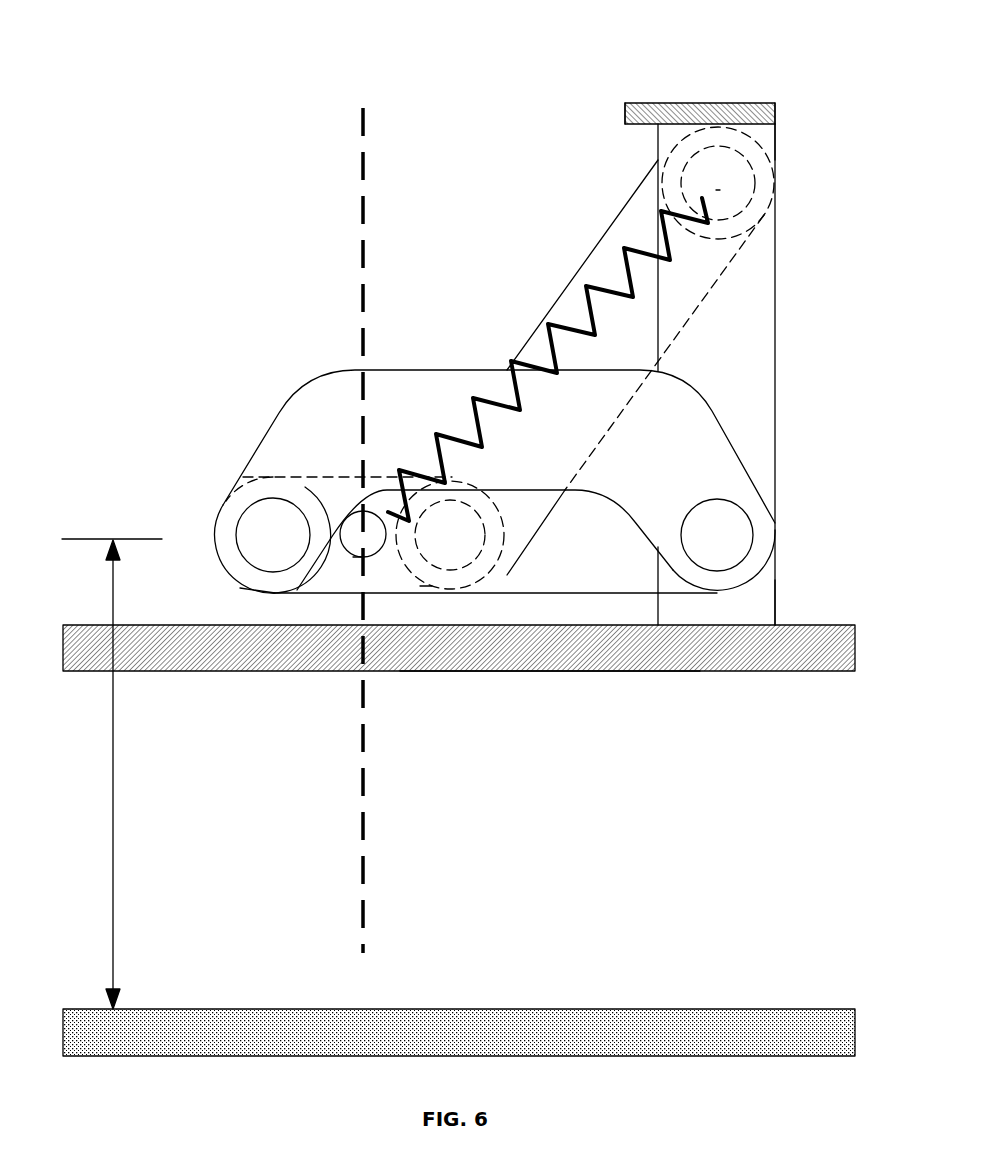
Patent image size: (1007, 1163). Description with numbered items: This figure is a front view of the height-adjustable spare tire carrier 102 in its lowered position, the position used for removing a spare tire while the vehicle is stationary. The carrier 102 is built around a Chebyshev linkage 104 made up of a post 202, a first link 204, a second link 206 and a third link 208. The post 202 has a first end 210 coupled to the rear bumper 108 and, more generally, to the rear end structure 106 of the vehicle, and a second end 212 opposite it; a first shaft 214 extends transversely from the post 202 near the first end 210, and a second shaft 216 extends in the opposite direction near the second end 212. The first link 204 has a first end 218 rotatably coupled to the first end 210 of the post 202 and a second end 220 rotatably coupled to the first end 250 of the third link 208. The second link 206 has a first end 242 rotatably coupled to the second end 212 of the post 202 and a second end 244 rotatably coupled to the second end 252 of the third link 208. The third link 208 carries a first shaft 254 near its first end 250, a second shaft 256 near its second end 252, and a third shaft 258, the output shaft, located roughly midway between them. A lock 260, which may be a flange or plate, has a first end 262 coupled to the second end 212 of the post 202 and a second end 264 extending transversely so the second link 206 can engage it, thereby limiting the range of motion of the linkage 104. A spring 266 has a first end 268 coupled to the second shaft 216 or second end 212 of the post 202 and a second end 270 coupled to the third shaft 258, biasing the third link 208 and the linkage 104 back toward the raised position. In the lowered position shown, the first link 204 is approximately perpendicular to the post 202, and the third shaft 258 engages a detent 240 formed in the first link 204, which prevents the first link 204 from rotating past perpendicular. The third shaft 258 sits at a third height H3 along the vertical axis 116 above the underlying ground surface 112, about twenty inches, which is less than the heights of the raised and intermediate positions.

The height-adjustable spare tire carrier 102 is at (158, 42).
The Chebyshev linkage 104 is at (482, 253).
The rear end structure 106 is at (482, 672).
The rear bumper 108 is at (543, 672).
The underlying ground surface 112 is at (520, 1009).
The vertical axis 116 is at (365, 873).
The third height H3 is at (112, 774).
The post 202 is at (776, 425).
The first link 204 is at (713, 408).
The second link 206 is at (581, 265).
The third link 208 is at (317, 594).
The first end of the post 210 is at (776, 595).
The second end of the post 212 is at (776, 137).
The first shaft 214 is at (753, 528).
The second shaft 216 is at (751, 203).
The first end of the first link 218 is at (725, 597).
The second end of the first link 220 is at (257, 594).
The detent 240 is at (356, 507).
The first end of the second link 242 is at (765, 148).
The second end of the second link 244 is at (425, 583).
The first end of the third link 250 is at (215, 555).
The second end of the third link 252 is at (505, 522).
The first shaft of the third link 254 is at (237, 512).
The second shaft of the third link 256 is at (497, 560).
The third shaft 258 is at (353, 558).
The lock 260 is at (700, 102).
The first end of the lock 262 is at (777, 110).
The second end of the lock 264 is at (626, 108).
The spring 266 is at (630, 250).
The first end of the spring 268 is at (707, 197).
The second end of the spring 270 is at (400, 468).